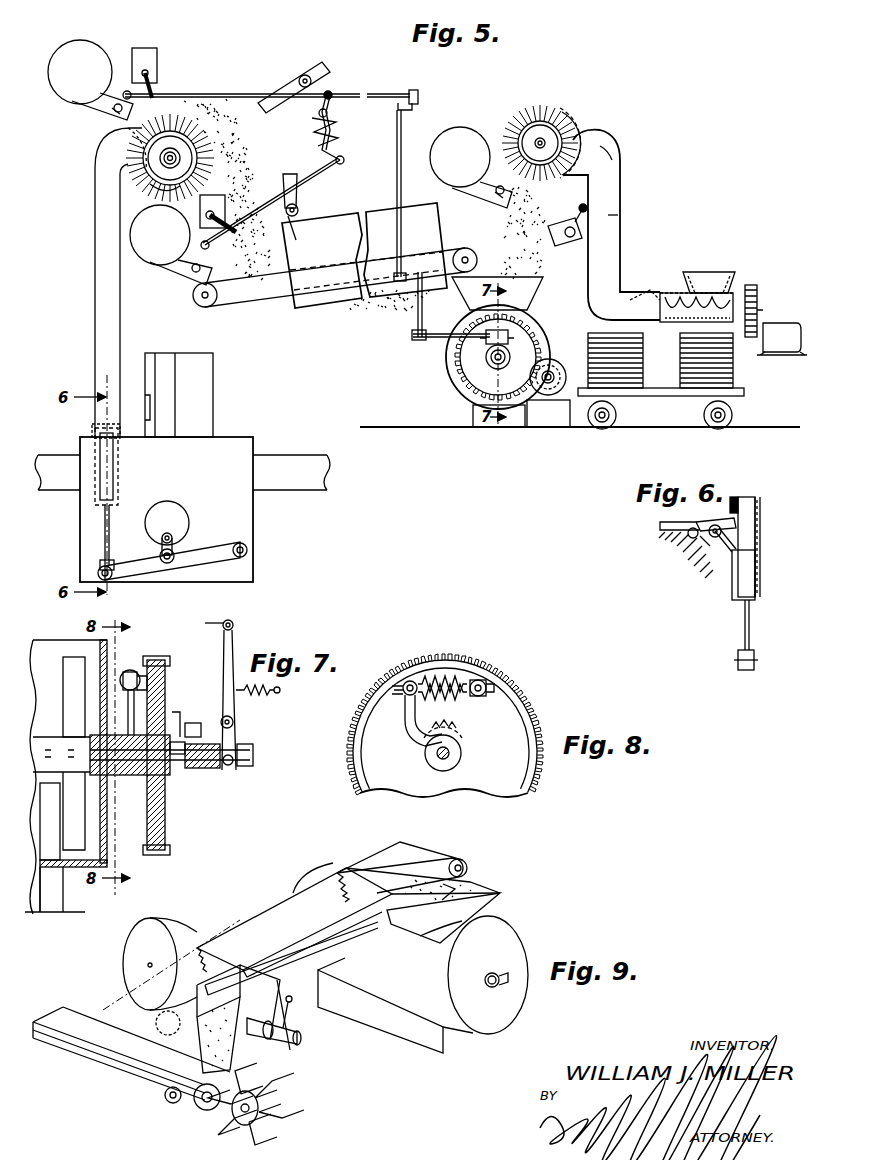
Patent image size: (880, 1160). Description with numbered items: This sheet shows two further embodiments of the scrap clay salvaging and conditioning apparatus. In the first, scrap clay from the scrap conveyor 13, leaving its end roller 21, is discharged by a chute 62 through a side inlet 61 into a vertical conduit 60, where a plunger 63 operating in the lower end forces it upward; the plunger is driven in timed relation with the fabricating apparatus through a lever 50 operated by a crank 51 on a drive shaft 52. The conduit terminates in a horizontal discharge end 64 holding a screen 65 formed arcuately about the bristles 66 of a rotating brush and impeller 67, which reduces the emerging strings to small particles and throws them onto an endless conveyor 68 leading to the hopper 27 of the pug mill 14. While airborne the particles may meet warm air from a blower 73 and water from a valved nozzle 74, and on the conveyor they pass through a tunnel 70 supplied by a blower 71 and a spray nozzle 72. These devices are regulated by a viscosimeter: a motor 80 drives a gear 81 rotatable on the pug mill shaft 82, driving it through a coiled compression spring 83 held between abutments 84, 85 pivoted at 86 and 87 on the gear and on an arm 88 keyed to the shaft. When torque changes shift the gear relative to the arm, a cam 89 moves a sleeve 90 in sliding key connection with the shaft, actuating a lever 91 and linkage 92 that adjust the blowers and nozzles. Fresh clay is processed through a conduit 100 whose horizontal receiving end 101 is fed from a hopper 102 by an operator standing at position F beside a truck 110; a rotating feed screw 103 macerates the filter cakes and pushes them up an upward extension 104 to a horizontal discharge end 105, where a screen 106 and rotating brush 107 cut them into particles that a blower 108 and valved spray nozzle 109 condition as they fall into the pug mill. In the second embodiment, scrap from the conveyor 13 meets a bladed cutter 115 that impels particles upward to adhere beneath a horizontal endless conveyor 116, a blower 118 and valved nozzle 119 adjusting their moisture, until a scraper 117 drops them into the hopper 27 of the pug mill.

In FIG. 5, the blower 73 is at (68, 58).
In FIG. 5, the valved nozzle 74 is at (292, 92).
In FIG. 5, the linkage 92 is at (372, 94).
In FIG. 7, the linkage 92 is at (226, 622).
In FIG. 5, the screen 65 is at (125, 137).
In FIG. 5, the horizontal discharge end 64 is at (118, 152).
In FIG. 5, the rotating brush and impeller 67 is at (160, 160).
In FIG. 5, the bristles 66 is at (155, 192).
In FIG. 5, the blower 71 is at (150, 262).
In FIG. 5, the spray nozzle 72 is at (303, 214).
In FIG. 5, the vertical conduit 60 is at (100, 310).
In FIG. 6, the vertical conduit 60 is at (762, 500).
In FIG. 5, the scrap conveyor 13 is at (97, 428).
In FIG. 6, the scrap conveyor 13 is at (672, 524).
In FIG. 9, the scrap conveyor 13 is at (118, 1050).
In FIG. 5, the plunger 63 is at (100, 495).
In FIG. 6, the plunger 63 is at (757, 570).
In FIG. 5, the shaft 52 is at (170, 520).
In FIG. 5, the crank 51 is at (185, 516).
In FIG. 5, the lever 50 is at (218, 548).
In FIG. 6, the lever 50 is at (748, 668).
In FIG. 5, the endless conveyor 68 is at (230, 302).
In FIG. 5, the tunnel 70 is at (338, 300).
In FIG. 5, the hopper 27 is at (540, 292).
In FIG. 9, the hopper 27 is at (503, 901).
In FIG. 5, the lever 91 is at (486, 340).
In FIG. 7, the lever 91 is at (245, 736).
In FIG. 5, the pug mill 14 is at (447, 376).
In FIG. 7, the pug mill 14 is at (78, 880).
In FIG. 9, the pug mill 14 is at (530, 936).
In FIG. 5, the gear 81 is at (470, 380).
In FIG. 7, the gear 81 is at (165, 660).
In FIG. 8, the gear 81 is at (530, 716).
In FIG. 5, the pug mill shaft 82 is at (495, 362).
In FIG. 7, the pug mill shaft 82 is at (255, 752).
In FIG. 8, the pug mill shaft 82 is at (450, 760).
In FIG. 5, the motor 80 is at (556, 362).
In FIG. 5, the rotating brush 107 is at (535, 135).
In FIG. 5, the blower 108 is at (464, 133).
In FIG. 5, the screen 106 is at (602, 128).
In FIG. 5, the horizontal discharge end 105 is at (606, 148).
In FIG. 5, the upward extension 104 is at (622, 205).
In FIG. 5, the valved spray nozzle 109 is at (570, 222).
In FIG. 5, the rotating feed screw 103 is at (668, 296).
In FIG. 5, the hopper 102 is at (730, 280).
In FIG. 5, the conduit 100 is at (597, 307).
In FIG. 5, the horizontal clay receiving end 101 is at (672, 322).
In FIG. 5, the truck 110 is at (670, 394).
In FIG. 5, the position adjacent the pug mill F is at (740, 372).
In FIG. 6, the side inlet 61 is at (722, 524).
In FIG. 6, the chute 62 is at (736, 546).
In FIG. 6, the belt roller 21 is at (715, 548).
In FIG. 9, the belt roller 21 is at (196, 1108).
In FIG. 7, the coiled compression spring 83 is at (133, 670).
In FIG. 8, the coiled compression spring 83 is at (446, 684).
In FIG. 7, the pivot 86 is at (150, 690).
In FIG. 8, the pivot 86 is at (490, 690).
In FIG. 7, the arm 88 is at (128, 702).
In FIG. 8, the arm 88 is at (408, 738).
In FIG. 7, the cam 89 is at (182, 724).
In FIG. 8, the cam 89 is at (464, 736).
In FIG. 7, the sleeve 90 is at (207, 772).
In FIG. 8, the abutment 85 is at (417, 680).
In FIG. 8, the abutment 84 is at (482, 682).
In FIG. 8, the pivot 87 is at (398, 686).
In FIG. 9, the blower 118 is at (172, 925).
In FIG. 9, the horizontal endless conveyor 116 is at (262, 922).
In FIG. 9, the scraper 117 is at (466, 892).
In FIG. 9, the valved nozzle 119 is at (300, 1030).
In FIG. 9, the cutter 115 is at (300, 1098).